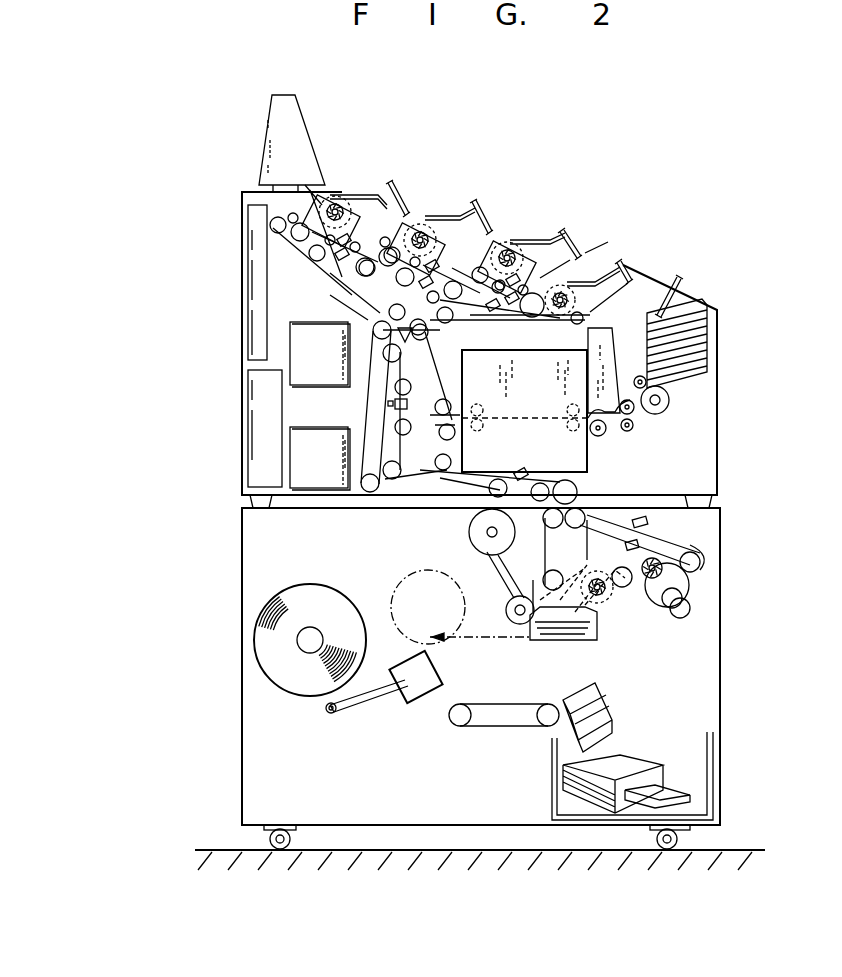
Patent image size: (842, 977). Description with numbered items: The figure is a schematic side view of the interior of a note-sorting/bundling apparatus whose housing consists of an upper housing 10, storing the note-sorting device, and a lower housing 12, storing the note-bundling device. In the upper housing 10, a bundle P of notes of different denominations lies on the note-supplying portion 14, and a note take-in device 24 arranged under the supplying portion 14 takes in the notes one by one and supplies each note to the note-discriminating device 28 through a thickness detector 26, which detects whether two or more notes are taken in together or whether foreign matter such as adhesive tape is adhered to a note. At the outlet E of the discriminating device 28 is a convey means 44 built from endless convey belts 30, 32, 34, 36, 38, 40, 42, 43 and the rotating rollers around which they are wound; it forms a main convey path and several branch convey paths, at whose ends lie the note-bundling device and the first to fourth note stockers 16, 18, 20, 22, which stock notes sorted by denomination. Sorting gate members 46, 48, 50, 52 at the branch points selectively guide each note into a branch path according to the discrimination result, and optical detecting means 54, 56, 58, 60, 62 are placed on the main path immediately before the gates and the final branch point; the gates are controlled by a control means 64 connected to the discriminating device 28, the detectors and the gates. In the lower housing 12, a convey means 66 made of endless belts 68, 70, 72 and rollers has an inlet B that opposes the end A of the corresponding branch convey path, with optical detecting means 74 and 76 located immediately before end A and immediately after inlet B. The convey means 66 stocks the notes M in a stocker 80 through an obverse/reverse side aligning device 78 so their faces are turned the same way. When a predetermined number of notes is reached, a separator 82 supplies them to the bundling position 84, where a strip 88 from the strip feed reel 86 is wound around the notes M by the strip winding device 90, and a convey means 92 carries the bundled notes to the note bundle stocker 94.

The upper housing 10 is at (242, 290).
The lower housing 12 is at (242, 578).
The bank note supplying portion 14 is at (700, 328).
The first note stocker 16 is at (590, 287).
The second note stocker 18 is at (560, 250).
The third note stocker 20 is at (483, 211).
The fourth note stocker 22 is at (383, 192).
The note take-in device 24 is at (673, 397).
The thickness detector 26 is at (603, 367).
The note-discriminating device 28 is at (572, 458).
The endless convey belt 30 is at (445, 440).
The endless convey belt 32 is at (523, 411).
The endless convey belt 34 is at (520, 310).
The endless convey belt 36 is at (364, 283).
The endless convey belt 38 is at (485, 233).
The endless convey belt 40 is at (404, 214).
The endless convey belt 42 is at (305, 187).
The endless convey belt 43 is at (362, 423).
The convey means 44 is at (380, 316).
The sorting gate member 46 is at (392, 345).
The sorting gate member 48 is at (548, 308).
The sorting gate member 50 is at (450, 213).
The sorting gate member 52 is at (387, 203).
The optical detecting means 54 is at (410, 398).
The optical detecting means 56 is at (507, 331).
The optical detecting means 58 is at (535, 237).
The optical detecting means 60 is at (421, 313).
The optical detecting means 62 is at (328, 272).
The control means 64 is at (300, 340).
The convey means 66 is at (698, 545).
The endless belt 68 is at (612, 513).
The endless belt 70 is at (525, 543).
The endless belt 72 is at (608, 597).
The optical detecting means 74 is at (525, 480).
The optical detecting means 76 is at (648, 523).
The obverse/reverse side aligning device 78 is at (680, 598).
The stocker 80 is at (585, 640).
The separator 82 is at (503, 576).
The bundling position 84 is at (393, 593).
The strip feed reel 86 is at (312, 598).
The strip 88 is at (362, 706).
The strip winding device 90 is at (418, 700).
The convey means 92 is at (485, 704).
The note bundle stocker 94 is at (705, 795).
The end of branch convey path A is at (555, 480).
The inlet B is at (565, 554).
The outlet E is at (476, 451).
The bank notes M is at (540, 640).
The bundle P is at (700, 363).